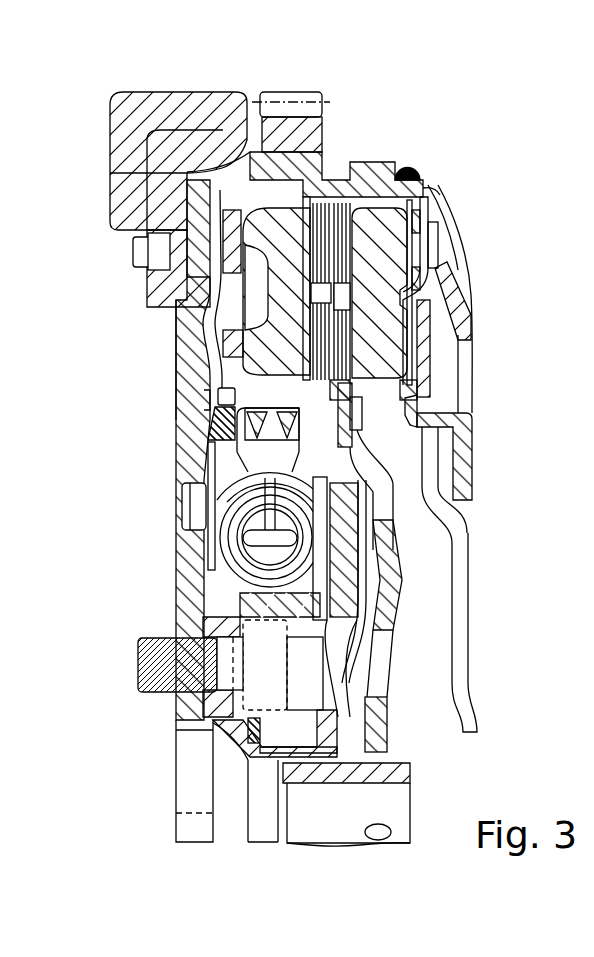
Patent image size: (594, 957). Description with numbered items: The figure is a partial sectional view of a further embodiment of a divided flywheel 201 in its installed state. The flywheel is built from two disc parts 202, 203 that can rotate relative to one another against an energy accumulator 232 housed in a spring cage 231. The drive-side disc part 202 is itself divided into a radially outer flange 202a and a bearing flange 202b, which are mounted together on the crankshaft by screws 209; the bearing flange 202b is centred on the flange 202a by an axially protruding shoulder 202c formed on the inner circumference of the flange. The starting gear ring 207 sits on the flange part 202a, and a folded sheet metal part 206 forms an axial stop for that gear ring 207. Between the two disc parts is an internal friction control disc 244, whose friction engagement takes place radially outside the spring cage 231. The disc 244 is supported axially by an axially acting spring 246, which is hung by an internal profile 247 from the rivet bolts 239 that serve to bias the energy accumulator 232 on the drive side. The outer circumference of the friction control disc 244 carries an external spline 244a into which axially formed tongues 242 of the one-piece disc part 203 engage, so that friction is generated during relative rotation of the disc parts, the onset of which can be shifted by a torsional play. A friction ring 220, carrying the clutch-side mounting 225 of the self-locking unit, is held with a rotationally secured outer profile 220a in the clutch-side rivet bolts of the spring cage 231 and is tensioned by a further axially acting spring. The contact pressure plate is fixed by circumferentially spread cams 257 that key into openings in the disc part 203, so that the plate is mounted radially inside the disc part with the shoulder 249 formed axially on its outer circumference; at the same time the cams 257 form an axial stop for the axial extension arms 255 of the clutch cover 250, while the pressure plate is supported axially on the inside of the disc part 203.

The divided flywheel 201 is at (450, 72).
The disc part 202 is at (160, 550).
The radially outer flange 202a is at (210, 400).
The bearing flange 202b is at (235, 745).
The axially protruding shoulder 202c is at (210, 727).
The disc part 203 is at (345, 575).
The folded sheet metal part 206 is at (203, 105).
The starting gear ring 207 is at (325, 117).
The screws 209 is at (157, 648).
The friction ring 220 is at (355, 592).
The diaphragm spring tongue 220a is at (360, 548).
The clutch-side mounting 225 is at (255, 640).
The spring cage 231 is at (222, 447).
The energy accumulator 232 is at (330, 513).
The rivet bolts 239 is at (195, 512).
The axially formed tongues 242 is at (185, 378).
The friction control disc 244 is at (215, 415).
The external spline 244a is at (212, 403).
The axially acting spring 246 is at (232, 433).
The internal profile 247 is at (210, 503).
The shoulder 249 is at (405, 167).
The clutch cover 250 is at (470, 305).
The axial extension arms 255 is at (113, 173).
The cams 257 is at (305, 195).